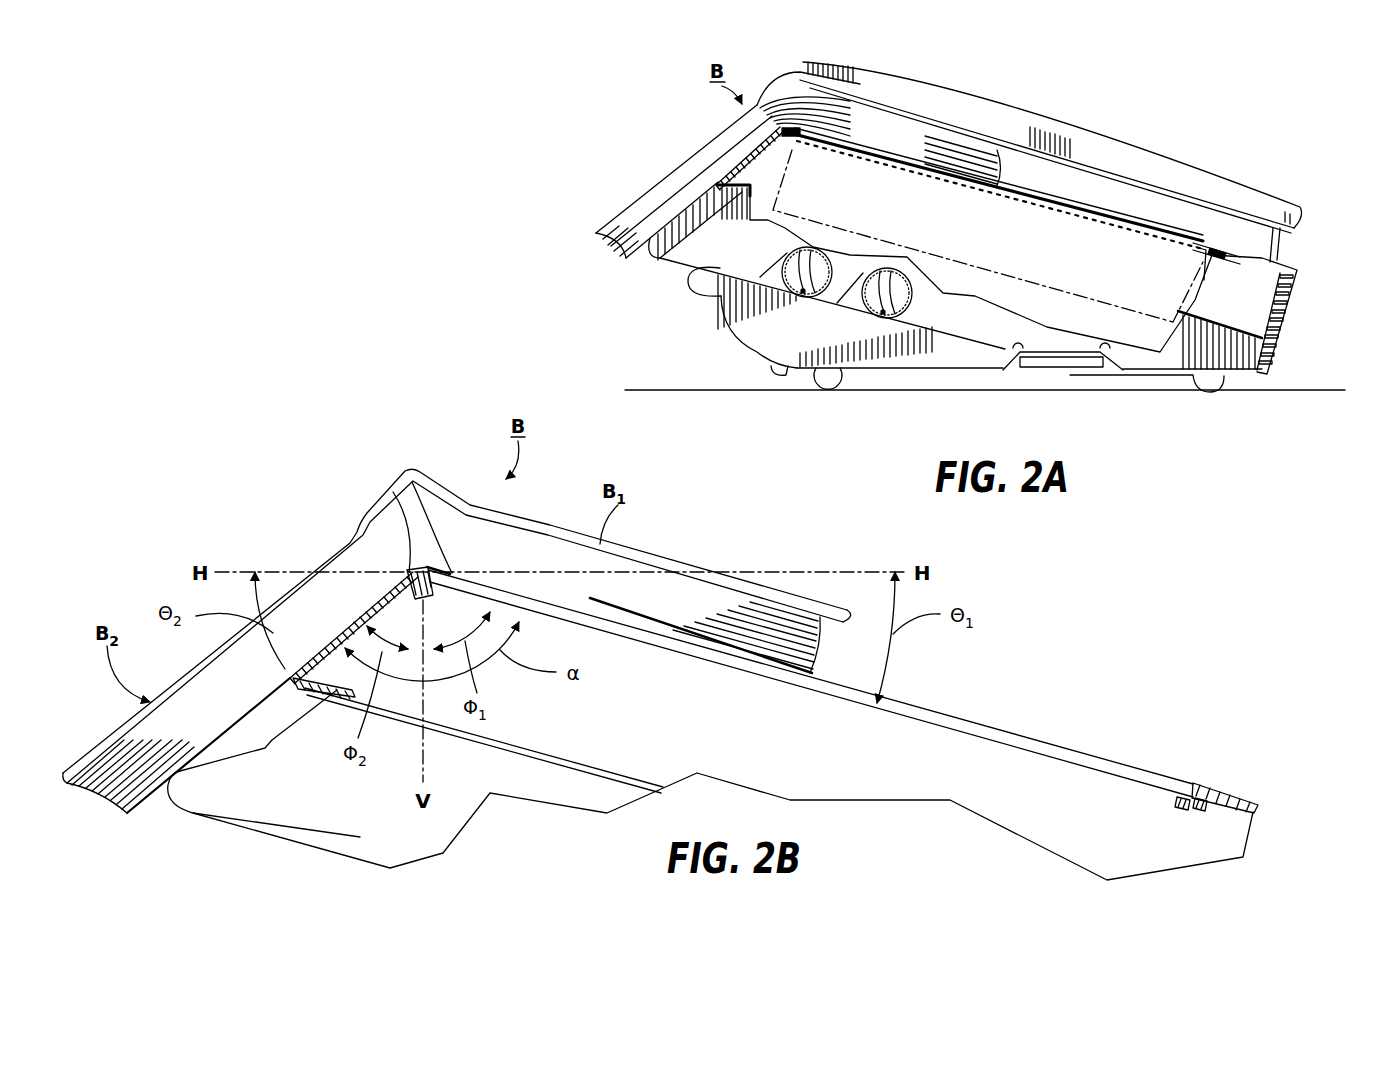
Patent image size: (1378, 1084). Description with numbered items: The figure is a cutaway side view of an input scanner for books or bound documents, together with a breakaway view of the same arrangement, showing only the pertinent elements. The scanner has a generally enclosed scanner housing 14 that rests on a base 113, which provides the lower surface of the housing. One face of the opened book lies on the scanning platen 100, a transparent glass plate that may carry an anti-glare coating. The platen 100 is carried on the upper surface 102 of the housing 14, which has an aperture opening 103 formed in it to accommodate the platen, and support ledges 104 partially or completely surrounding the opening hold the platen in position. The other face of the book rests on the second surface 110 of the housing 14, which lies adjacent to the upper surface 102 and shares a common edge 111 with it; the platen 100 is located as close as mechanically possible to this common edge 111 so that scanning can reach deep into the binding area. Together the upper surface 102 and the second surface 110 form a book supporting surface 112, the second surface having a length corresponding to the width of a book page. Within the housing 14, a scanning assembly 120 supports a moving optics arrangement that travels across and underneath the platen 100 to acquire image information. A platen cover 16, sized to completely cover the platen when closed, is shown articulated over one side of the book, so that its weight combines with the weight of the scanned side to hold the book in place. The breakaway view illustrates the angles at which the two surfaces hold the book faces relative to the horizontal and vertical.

In FIG. 2A, the scanner housing 14 is at (1284, 244).
In FIG. 2A, the platen cover 16 is at (1100, 134).
In FIG. 2A, the scanning platen 100 is at (953, 178).
In FIG. 2B, the scanning platen 100 is at (800, 683).
In FIG. 2A, the upper surface 102 is at (1250, 247).
In FIG. 2B, the upper surface 102 is at (1237, 797).
In FIG. 2A, the aperture opening 103 is at (1202, 247).
In FIG. 2A, the support ledges 104 is at (1197, 253).
In FIG. 2B, the support ledges 104 is at (1190, 803).
In FIG. 2A, the second surface 110 is at (737, 156).
In FIG. 2B, the second surface 110 is at (358, 626).
In FIG. 2A, the common edge 111 is at (764, 90).
In FIG. 2A, the book supporting surface 112 is at (790, 138).
In FIG. 2A, the base 113 is at (1037, 381).
In FIG. 2A, the scanning assembly 120 is at (989, 278).